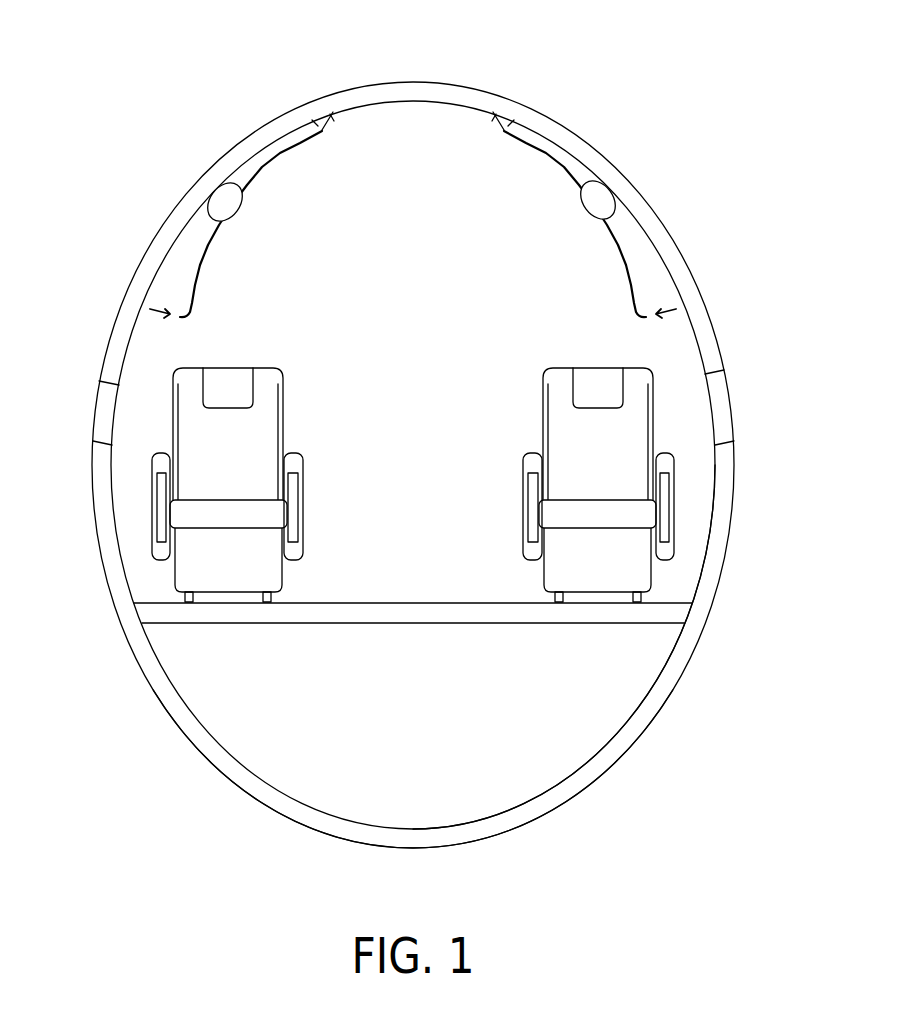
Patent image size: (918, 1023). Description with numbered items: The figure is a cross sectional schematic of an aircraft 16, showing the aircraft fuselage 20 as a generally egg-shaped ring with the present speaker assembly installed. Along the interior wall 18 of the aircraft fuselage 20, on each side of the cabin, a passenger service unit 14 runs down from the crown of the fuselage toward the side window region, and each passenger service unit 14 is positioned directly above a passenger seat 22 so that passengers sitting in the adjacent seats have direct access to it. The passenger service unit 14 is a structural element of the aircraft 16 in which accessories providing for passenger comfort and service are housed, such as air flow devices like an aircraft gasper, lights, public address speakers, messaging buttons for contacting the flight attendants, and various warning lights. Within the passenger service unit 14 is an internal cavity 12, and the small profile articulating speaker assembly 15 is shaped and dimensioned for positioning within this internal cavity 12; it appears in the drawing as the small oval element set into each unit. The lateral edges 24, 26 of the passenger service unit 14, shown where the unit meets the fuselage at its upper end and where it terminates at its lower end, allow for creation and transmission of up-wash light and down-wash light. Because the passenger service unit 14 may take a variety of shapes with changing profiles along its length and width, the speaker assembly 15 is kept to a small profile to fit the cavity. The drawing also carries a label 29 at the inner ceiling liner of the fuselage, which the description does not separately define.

The internal cavity 12 is at (180, 267).
The passenger service unit 14 is at (277, 150).
The small profile articulating speaker assembly 15 is at (215, 190).
The aircraft 16 is at (628, 750).
The interior wall 18 is at (693, 347).
The aircraft fuselage 20 is at (413, 83).
The passenger seat 22 is at (272, 424).
The lateral edge 24 is at (335, 115).
The lateral edge 26 is at (153, 313).
The ceiling liner 29 is at (408, 104).